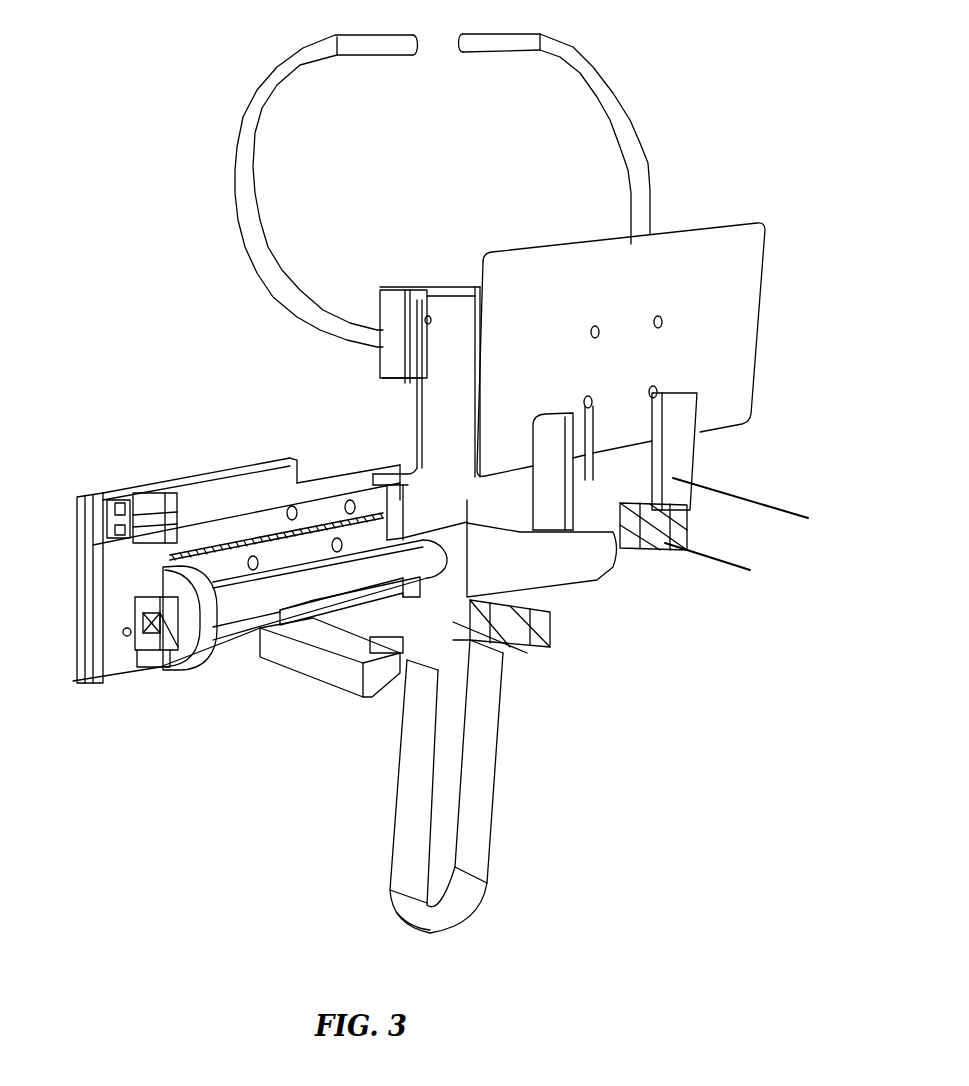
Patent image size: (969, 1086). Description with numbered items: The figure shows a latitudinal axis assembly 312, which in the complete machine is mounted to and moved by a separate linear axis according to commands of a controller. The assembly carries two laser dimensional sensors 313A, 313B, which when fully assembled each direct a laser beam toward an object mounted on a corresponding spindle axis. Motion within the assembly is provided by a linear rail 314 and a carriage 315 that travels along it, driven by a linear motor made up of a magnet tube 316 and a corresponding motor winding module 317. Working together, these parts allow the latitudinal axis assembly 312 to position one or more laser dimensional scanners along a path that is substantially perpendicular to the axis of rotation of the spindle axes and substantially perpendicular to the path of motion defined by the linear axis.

The latitudinal axis assembly 312 is at (202, 783).
The laser dimensional sensor 313A is at (389, 413).
The laser dimensional sensor 313B is at (682, 449).
The linear rail 314 is at (233, 563).
The carriage 315 is at (345, 483).
The magnet tube 316 is at (253, 600).
The motor winding module 317 is at (548, 562).